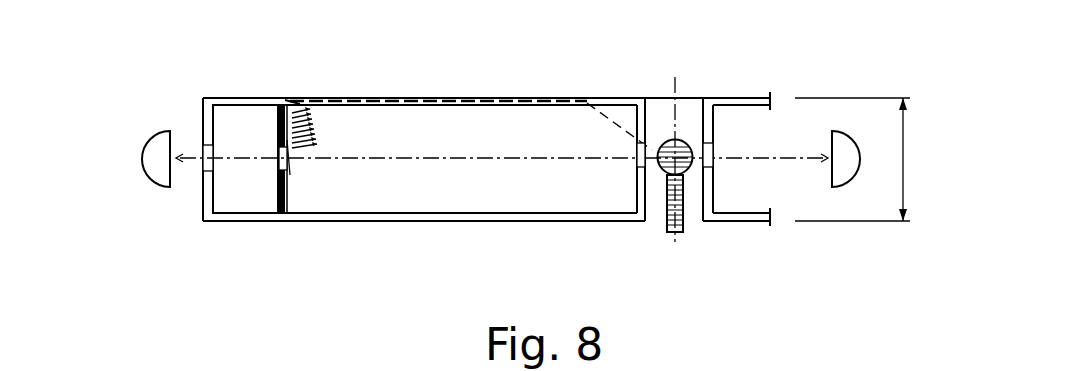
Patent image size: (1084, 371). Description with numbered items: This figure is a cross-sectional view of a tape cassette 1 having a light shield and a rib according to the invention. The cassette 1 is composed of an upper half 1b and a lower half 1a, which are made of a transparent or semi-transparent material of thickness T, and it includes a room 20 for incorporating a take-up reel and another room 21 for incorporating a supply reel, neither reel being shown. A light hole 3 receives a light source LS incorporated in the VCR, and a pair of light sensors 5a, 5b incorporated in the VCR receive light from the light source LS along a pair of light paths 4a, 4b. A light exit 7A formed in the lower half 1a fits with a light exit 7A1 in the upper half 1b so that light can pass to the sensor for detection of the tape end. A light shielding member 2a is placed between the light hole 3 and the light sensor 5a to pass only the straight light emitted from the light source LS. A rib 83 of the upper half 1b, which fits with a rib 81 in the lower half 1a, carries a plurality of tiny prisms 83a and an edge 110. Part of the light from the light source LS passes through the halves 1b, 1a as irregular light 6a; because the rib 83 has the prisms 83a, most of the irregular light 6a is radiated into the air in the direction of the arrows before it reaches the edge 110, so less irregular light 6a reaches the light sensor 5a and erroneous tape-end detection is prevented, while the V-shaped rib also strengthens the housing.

The tape cassette 1 is at (486, 189).
The lower half 1a is at (357, 218).
The upper half 1b is at (491, 69).
The light shielding member 2a is at (176, 194).
The light hole 3 is at (640, 167).
The light path 4a is at (538, 158).
The light path 4b is at (735, 158).
The light sensor 5a is at (123, 137).
The light sensor 5b is at (848, 185).
The irregular light 6a is at (292, 147).
The light exit 7A is at (203, 172).
The light exit 7A1 is at (287, 167).
The room 20 is at (445, 113).
The room 21 is at (747, 112).
The rib 81 is at (288, 197).
The rib 83 is at (277, 110).
The prism 83a is at (296, 103).
The edge 110 is at (288, 152).
The light source LS is at (684, 222).
The thickness T is at (903, 165).